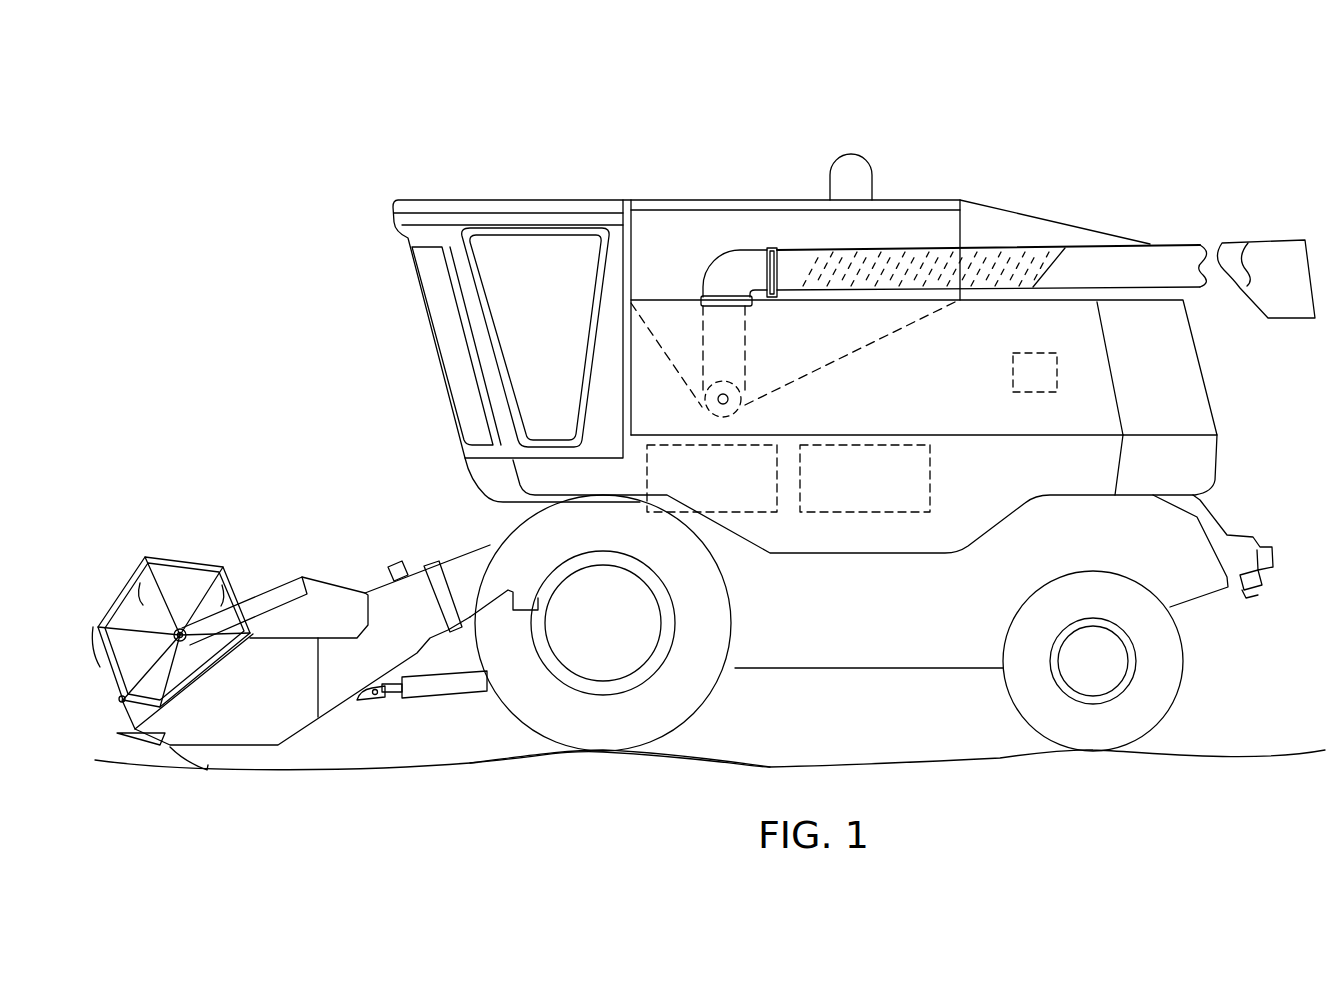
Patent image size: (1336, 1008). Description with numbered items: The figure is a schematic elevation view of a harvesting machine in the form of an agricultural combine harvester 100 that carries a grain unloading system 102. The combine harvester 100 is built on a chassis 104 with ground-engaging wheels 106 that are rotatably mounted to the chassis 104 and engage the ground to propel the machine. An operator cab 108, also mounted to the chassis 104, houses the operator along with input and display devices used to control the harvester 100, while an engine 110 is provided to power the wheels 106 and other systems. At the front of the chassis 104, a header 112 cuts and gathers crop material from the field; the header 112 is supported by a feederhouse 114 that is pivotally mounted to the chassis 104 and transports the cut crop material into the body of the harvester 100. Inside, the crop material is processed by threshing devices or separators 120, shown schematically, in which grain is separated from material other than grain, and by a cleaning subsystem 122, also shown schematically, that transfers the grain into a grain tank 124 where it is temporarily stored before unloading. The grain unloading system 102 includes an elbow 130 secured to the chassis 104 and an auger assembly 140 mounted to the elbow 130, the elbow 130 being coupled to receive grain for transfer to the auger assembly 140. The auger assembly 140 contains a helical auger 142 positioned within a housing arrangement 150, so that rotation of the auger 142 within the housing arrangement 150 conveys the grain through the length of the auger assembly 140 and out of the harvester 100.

The agricultural combine harvester 100 is at (500, 120).
The grain unloading system 102 is at (740, 188).
The chassis 104 is at (808, 662).
The ground-engaging wheels 106 is at (1168, 664).
The operator cab 108 is at (517, 198).
The engine 110 is at (1010, 373).
The header 112 is at (162, 565).
The feederhouse 114 is at (413, 570).
The threshing devices or separators 120 is at (743, 513).
The cleaning subsystem 122 is at (863, 445).
The grain tank 124 is at (673, 305).
The elbow 130 is at (753, 257).
The auger assembly 140 is at (1030, 236).
The helical auger 142 is at (821, 268).
The housing arrangement 150 is at (1140, 244).